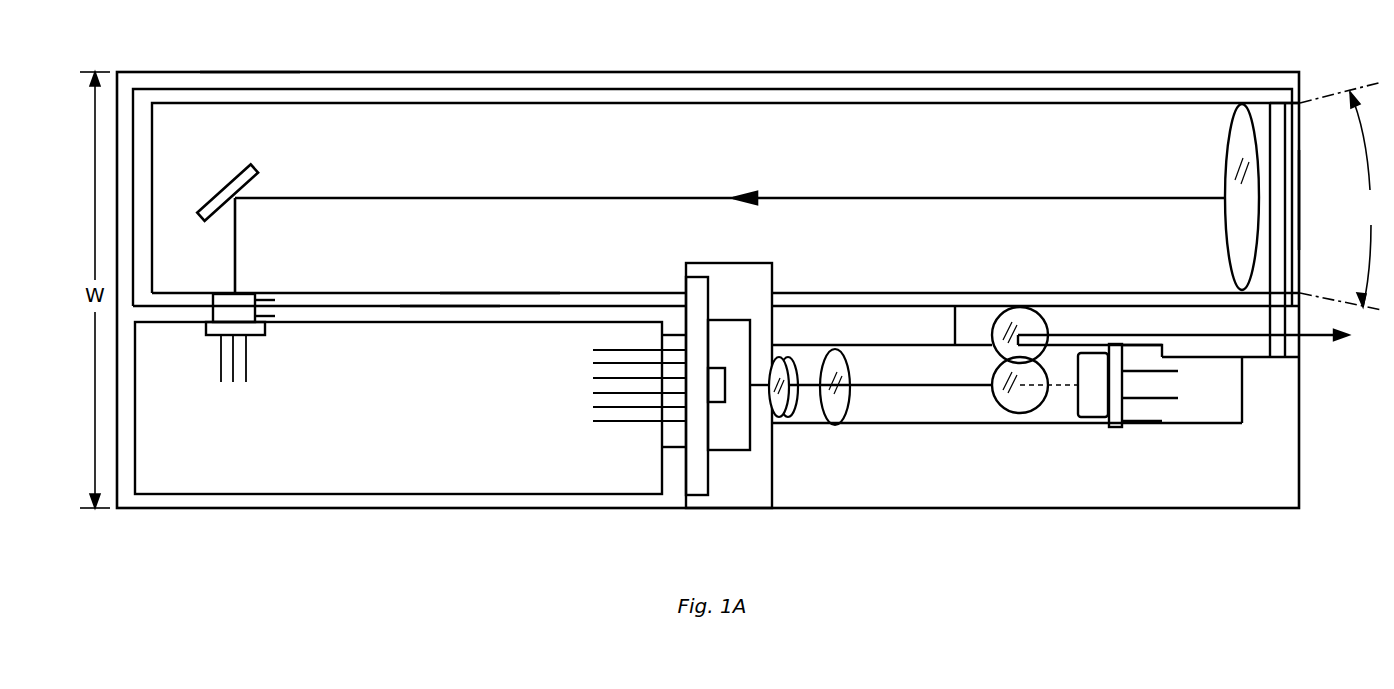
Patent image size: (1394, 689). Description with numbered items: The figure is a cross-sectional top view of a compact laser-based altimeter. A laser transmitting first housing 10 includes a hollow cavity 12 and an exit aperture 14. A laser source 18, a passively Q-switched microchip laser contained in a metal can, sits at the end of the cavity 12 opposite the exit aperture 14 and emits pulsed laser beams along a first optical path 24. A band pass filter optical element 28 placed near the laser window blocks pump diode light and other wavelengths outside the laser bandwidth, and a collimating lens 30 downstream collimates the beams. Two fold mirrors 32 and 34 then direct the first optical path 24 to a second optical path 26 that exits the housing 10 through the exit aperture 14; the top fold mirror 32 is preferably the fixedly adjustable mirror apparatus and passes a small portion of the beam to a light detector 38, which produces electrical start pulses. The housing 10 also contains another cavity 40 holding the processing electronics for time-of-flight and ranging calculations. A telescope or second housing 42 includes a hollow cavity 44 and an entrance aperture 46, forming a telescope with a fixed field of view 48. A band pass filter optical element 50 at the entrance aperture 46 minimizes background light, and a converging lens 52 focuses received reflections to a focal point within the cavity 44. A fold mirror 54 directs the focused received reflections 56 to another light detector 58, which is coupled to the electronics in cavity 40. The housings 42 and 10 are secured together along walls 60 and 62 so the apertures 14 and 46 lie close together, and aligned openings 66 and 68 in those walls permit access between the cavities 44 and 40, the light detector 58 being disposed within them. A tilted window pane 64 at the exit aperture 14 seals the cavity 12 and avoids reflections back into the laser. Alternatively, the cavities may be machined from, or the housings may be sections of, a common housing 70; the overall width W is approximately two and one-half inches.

The first housing 10 is at (1297, 458).
The hollow cavity 12 is at (1198, 315).
The exit aperture 14 is at (1320, 296).
The laser source 18 is at (732, 450).
The first optical path 24 is at (913, 388).
The second optical path 26 is at (1320, 340).
The band pass filter optical element 28 is at (797, 405).
The collimating lens 30 is at (846, 410).
The fold mirror 32 is at (1025, 413).
The fold mirror 34 is at (1020, 312).
The light detector 38 is at (1122, 438).
The cavity 40 is at (563, 478).
The second housing 42 is at (590, 95).
The hollow cavity 44 is at (868, 152).
The entrance aperture 46 is at (1303, 196).
The field of view 48 is at (1367, 199).
The band pass filter optical element 50 is at (1278, 113).
The converging lens 52 is at (1230, 158).
The fold mirror 54 is at (222, 186).
The focused received reflections 56 is at (455, 196).
The light detector 58 is at (222, 300).
The wall 60 is at (497, 292).
The wall 62 is at (445, 308).
The window pane 64 is at (1277, 359).
The opening 66 is at (258, 299).
The opening 68 is at (260, 317).
The common housing 70 is at (242, 77).